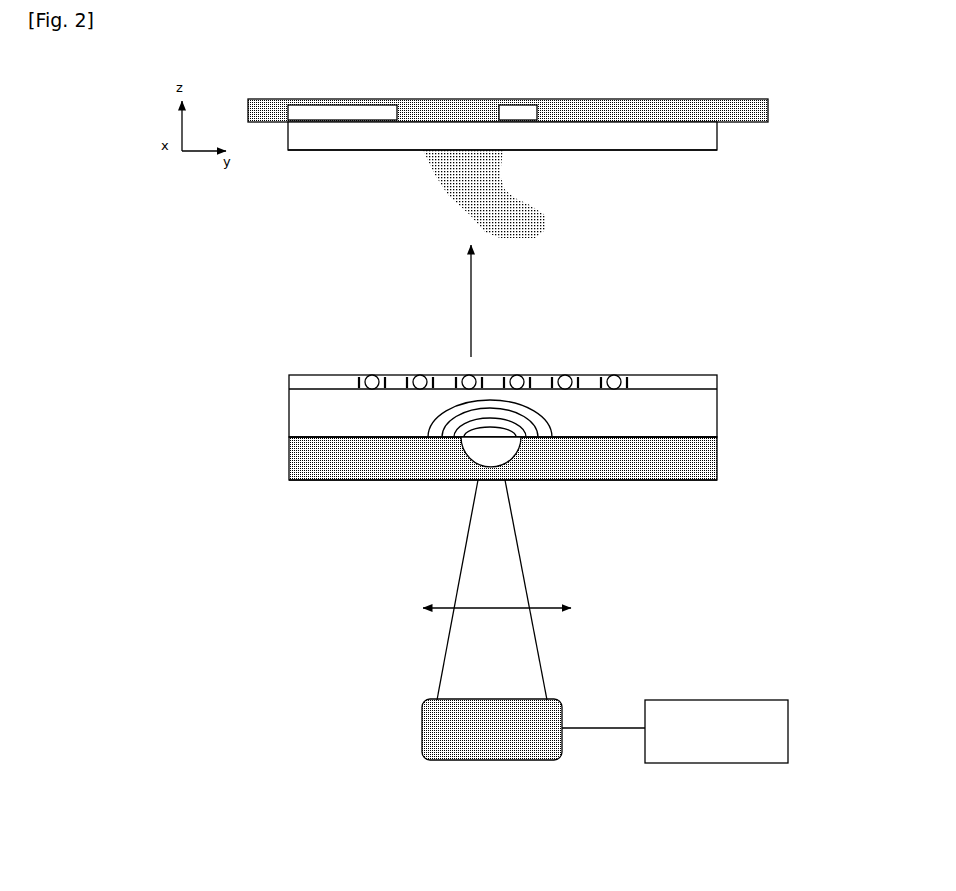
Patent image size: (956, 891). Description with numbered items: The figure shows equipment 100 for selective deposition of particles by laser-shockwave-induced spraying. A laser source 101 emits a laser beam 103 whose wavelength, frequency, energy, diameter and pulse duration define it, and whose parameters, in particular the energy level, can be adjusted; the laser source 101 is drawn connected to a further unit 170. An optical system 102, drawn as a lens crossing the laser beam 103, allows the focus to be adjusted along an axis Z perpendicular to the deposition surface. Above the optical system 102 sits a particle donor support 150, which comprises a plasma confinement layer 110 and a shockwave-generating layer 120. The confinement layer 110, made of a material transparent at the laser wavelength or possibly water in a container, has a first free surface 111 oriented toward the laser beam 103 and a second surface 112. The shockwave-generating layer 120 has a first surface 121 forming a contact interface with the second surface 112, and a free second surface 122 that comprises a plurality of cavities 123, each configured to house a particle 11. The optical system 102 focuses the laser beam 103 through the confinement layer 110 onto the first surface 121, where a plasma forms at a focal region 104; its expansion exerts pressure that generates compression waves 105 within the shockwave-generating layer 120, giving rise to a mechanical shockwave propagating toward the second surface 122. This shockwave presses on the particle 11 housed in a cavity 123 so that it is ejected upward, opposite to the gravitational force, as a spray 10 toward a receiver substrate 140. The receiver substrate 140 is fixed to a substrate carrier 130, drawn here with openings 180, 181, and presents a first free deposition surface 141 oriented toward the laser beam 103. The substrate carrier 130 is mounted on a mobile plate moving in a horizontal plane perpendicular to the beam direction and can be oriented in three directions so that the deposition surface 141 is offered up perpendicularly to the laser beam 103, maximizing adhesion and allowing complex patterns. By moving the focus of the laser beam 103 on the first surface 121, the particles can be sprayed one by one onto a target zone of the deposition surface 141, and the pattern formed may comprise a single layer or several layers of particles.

The spray / ejected liquid 10 is at (557, 211).
The particle 11 is at (518, 375).
The equipment 100 is at (228, 542).
The laser source 101 is at (410, 730).
The optical system 102 is at (405, 606).
The laser beam 103 is at (540, 653).
The light absorber / focal region 104 is at (520, 453).
The acoustic waves 105 is at (428, 423).
The plasma confinement layer 110 is at (717, 472).
The first free surface 111 is at (640, 480).
The second surface 112 is at (685, 440).
The shockwave-generating layer 120 is at (717, 412).
The first surface 121 is at (700, 437).
The free second surface 122 is at (717, 380).
The cavities 123 is at (462, 280).
The substrate carrier 130 is at (768, 108).
The receiver substrate 140 is at (717, 132).
The deposition surface 141 is at (658, 150).
The particle donor support 150 is at (245, 448).
The control unit 170 is at (700, 688).
The first opening 180 is at (371, 105).
The second opening 181 is at (538, 110).